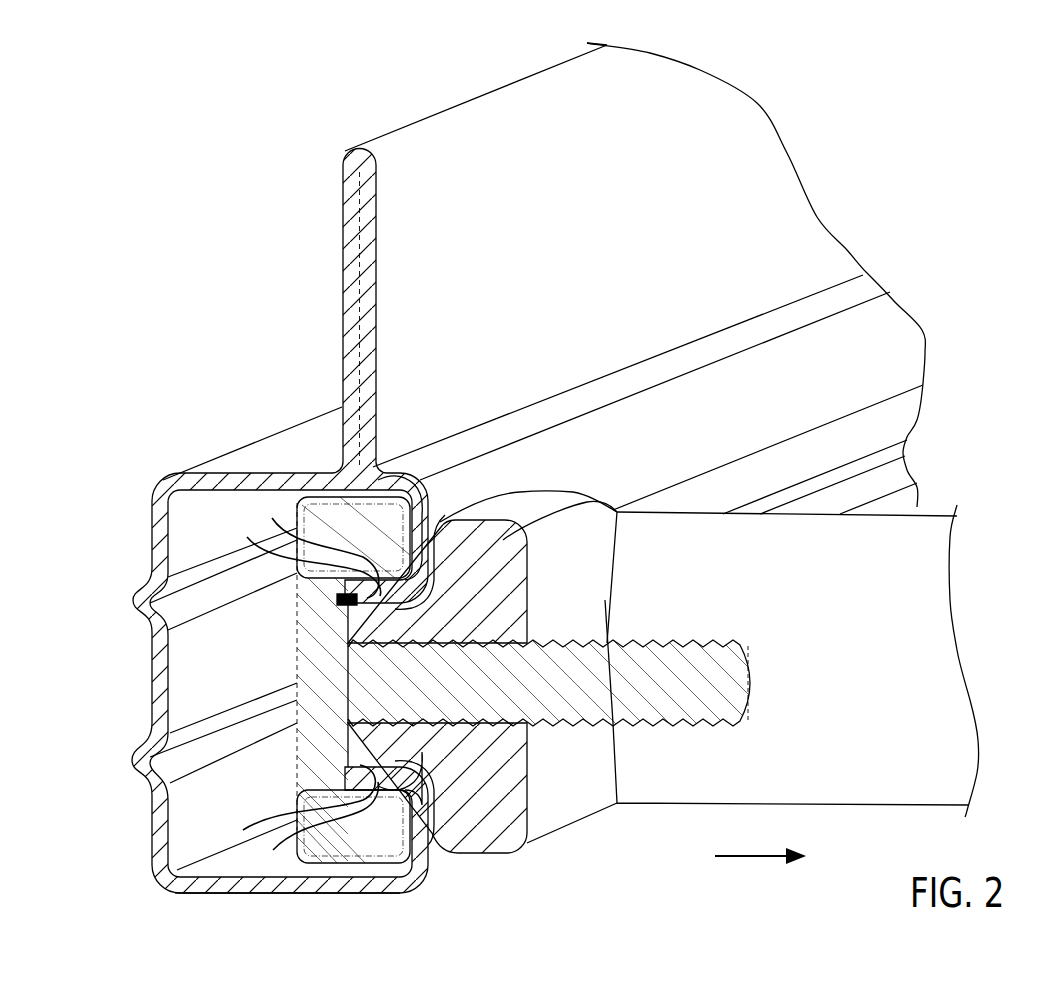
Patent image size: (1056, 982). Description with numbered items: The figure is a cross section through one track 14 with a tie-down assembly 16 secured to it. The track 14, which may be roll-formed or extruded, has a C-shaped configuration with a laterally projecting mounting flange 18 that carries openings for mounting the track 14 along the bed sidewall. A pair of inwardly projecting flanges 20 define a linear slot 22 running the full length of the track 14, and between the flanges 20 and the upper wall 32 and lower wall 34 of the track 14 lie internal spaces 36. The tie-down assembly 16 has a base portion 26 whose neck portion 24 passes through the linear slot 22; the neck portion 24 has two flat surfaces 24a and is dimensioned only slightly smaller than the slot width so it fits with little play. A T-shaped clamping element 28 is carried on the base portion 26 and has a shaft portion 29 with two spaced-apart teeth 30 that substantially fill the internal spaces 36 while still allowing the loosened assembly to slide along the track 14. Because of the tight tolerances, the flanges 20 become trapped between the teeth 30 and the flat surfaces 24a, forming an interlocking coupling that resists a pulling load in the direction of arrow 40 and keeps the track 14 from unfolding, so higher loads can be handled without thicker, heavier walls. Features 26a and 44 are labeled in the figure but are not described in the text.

The track 14 is at (142, 880).
The tie-down assembly 16 is at (681, 506).
The mounting flange 18 is at (425, 282).
The inwardly projecting flanges 20 is at (325, 808).
The linear slot 22 is at (340, 600).
The neck portion 24 is at (345, 745).
The flat surfaces 24a is at (368, 778).
The base portion 26 is at (540, 825).
The nut clip arm 26a is at (440, 513).
The T-shaped clamping element 28 is at (574, 733).
The shaft portion 29 is at (715, 678).
The teeth 30 is at (340, 520).
The upper wall 32 is at (232, 470).
The lower wall 34 is at (285, 887).
The internal spaces 36 is at (372, 477).
The arrow 40 is at (757, 860).
The threaded engagement 44 is at (377, 645).